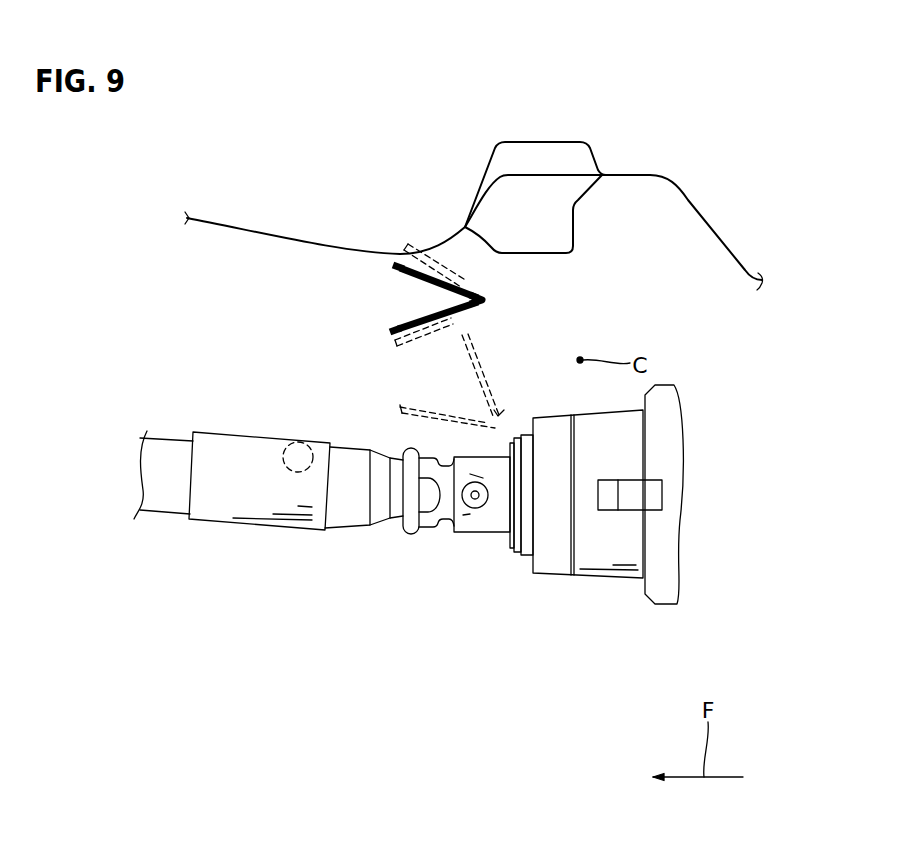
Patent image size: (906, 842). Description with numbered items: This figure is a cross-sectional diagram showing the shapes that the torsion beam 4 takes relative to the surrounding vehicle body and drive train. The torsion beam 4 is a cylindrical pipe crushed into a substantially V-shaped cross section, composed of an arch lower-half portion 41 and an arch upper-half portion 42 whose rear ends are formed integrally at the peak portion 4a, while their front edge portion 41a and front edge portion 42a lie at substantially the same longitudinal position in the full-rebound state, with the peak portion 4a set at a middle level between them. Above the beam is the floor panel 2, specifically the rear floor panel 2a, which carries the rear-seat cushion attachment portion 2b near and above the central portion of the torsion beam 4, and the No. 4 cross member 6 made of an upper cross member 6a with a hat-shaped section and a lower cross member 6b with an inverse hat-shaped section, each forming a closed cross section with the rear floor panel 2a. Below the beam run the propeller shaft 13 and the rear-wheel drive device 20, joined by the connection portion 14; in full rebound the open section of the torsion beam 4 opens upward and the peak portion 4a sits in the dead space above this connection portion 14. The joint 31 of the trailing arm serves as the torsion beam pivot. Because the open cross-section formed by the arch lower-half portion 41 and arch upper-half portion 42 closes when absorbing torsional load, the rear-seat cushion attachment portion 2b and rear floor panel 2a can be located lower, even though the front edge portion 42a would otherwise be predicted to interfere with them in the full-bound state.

The floor panel 2 is at (697, 198).
The rear floor panel 2a is at (638, 175).
The rear-seat cushion attachment portion 2b is at (363, 252).
The No. 4 cross member 6 is at (547, 170).
The upper cross member 6a is at (533, 142).
The lower cross member 6b is at (573, 240).
The torsion beam 4 is at (444, 336).
The peak portion 4a is at (485, 300).
The arch lower-half portion 41 is at (447, 322).
The front edge portion 41a is at (390, 332).
The arch upper-half portion 42 is at (443, 267).
The front edge portion 42a is at (392, 265).
The propeller shaft 13 is at (158, 503).
The joint 31 is at (300, 472).
The connection portion 14 is at (477, 503).
The rear-wheel drive device 20 is at (623, 580).